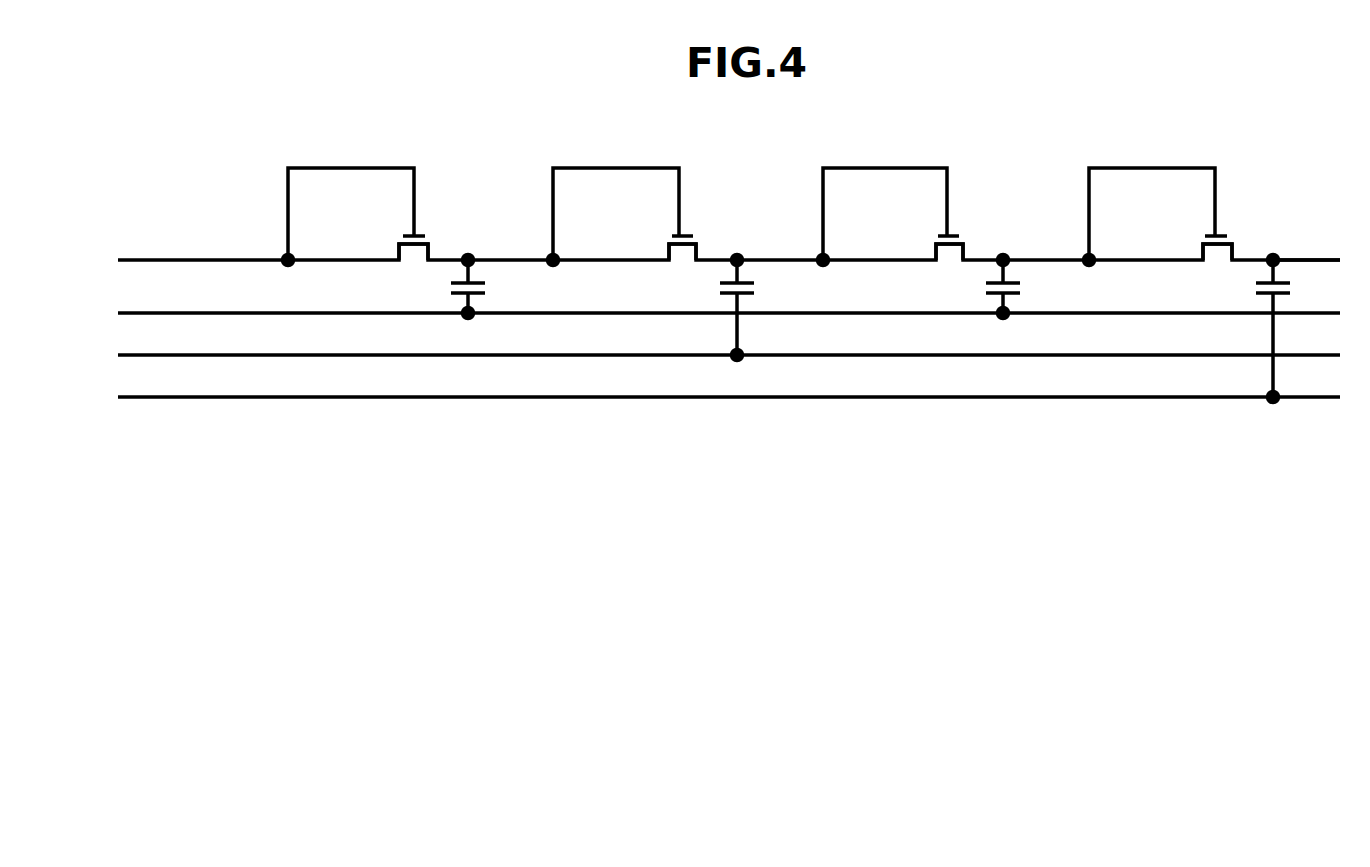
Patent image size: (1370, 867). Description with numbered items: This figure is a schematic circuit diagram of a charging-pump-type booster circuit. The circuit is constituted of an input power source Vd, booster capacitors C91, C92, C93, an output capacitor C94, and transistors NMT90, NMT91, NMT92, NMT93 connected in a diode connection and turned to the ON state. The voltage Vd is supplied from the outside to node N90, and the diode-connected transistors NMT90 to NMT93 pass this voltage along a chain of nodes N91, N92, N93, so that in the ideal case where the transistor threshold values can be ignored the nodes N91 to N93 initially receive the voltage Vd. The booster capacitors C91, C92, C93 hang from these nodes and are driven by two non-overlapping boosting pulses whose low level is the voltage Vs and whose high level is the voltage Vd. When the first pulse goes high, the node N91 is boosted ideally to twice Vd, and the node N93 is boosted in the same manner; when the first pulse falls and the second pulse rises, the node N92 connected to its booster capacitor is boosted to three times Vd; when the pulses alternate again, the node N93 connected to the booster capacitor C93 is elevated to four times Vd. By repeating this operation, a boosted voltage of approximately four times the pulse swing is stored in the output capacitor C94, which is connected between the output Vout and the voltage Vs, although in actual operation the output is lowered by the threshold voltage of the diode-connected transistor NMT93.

The transistor NMT90 is at (358, 198).
The transistor NMT91 is at (624, 198).
The transistor NMT92 is at (893, 198).
The transistor NMT93 is at (1160, 197).
The node N90 is at (314, 273).
The node N91 is at (578, 273).
The node N92 is at (849, 272).
The node N93 is at (1117, 272).
The booster capacitor C91 is at (492, 287).
The booster capacitor C92 is at (762, 308).
The booster capacitor C93 is at (1030, 287).
The output capacitor C94 is at (1301, 329).
The input power source Vd is at (702, 260).
The voltage Vs is at (702, 402).
The output voltage Vout is at (1313, 240).